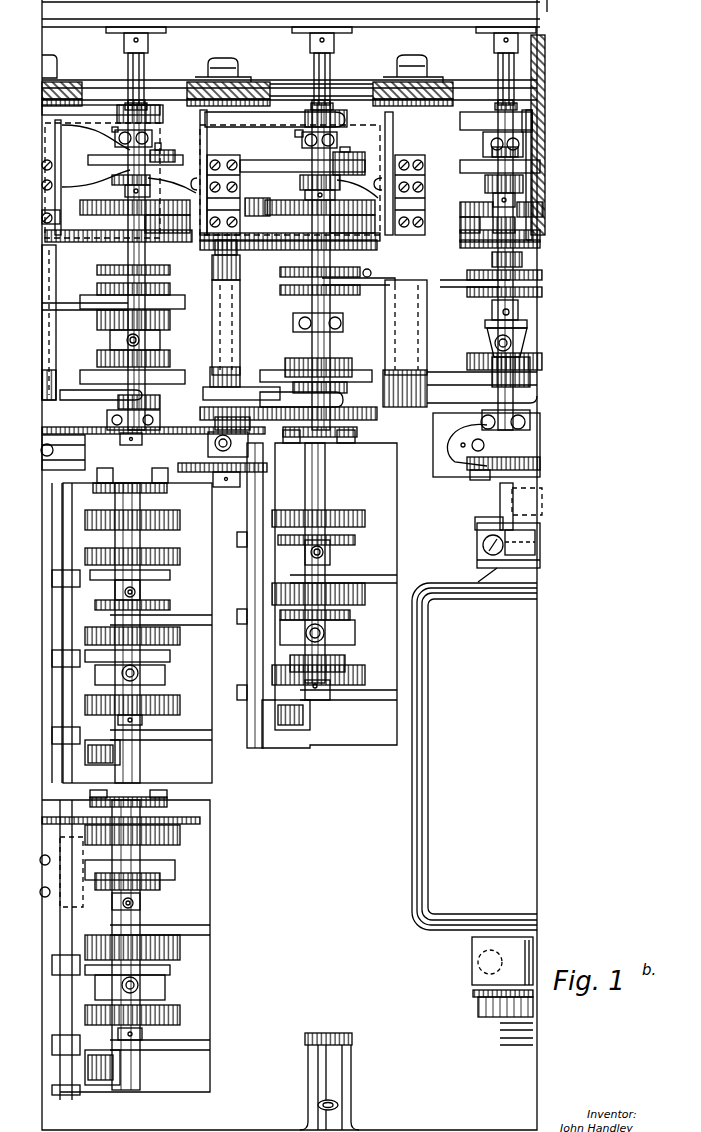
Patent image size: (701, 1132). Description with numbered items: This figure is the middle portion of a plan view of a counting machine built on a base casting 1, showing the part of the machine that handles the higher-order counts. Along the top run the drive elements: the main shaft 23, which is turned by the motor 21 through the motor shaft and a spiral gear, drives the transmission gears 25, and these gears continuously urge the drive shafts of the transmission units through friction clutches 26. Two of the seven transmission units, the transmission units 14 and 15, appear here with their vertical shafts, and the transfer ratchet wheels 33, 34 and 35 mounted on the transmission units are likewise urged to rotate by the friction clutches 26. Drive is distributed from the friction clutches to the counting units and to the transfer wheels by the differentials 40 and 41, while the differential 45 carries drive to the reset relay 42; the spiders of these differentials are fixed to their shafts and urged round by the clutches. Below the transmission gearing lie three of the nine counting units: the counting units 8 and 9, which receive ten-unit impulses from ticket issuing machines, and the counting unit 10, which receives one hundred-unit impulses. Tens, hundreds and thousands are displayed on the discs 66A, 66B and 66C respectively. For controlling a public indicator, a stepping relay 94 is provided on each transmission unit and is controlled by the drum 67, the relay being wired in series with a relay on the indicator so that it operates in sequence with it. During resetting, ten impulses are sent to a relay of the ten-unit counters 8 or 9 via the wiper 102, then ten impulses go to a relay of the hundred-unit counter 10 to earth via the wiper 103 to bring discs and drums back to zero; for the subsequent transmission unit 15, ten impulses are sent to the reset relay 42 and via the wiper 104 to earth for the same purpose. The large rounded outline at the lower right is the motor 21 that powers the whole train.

The base casting 1 is at (374, 1081).
The counting unit 8 is at (192, 775).
The counting unit 9 is at (192, 1085).
The counting unit 10 is at (378, 732).
The transmission unit 14 is at (202, 380).
The transmission unit 15 is at (388, 378).
The motor 21 is at (514, 776).
The main shaft 23 is at (356, 82).
The transmission gears 25 is at (80, 80).
The friction clutches 26 is at (245, 78).
The transfer ratchet wheel 33 is at (170, 368).
The transfer ratchet wheel 34 is at (173, 312).
The transfer ratchet wheel 35 is at (354, 377).
The differential 40 is at (63, 452).
The differential 41 is at (208, 442).
The reset relay 42 is at (458, 477).
The differential 45 is at (478, 347).
The disc 66A is at (93, 27).
The disc 66B is at (281, 30).
The disc 66C is at (467, 31).
The drum 67 is at (172, 220).
The stepping relay 94 is at (243, 147).
The wiper 102 is at (86, 240).
The wiper 103 is at (268, 224).
The wiper 104 is at (460, 244).